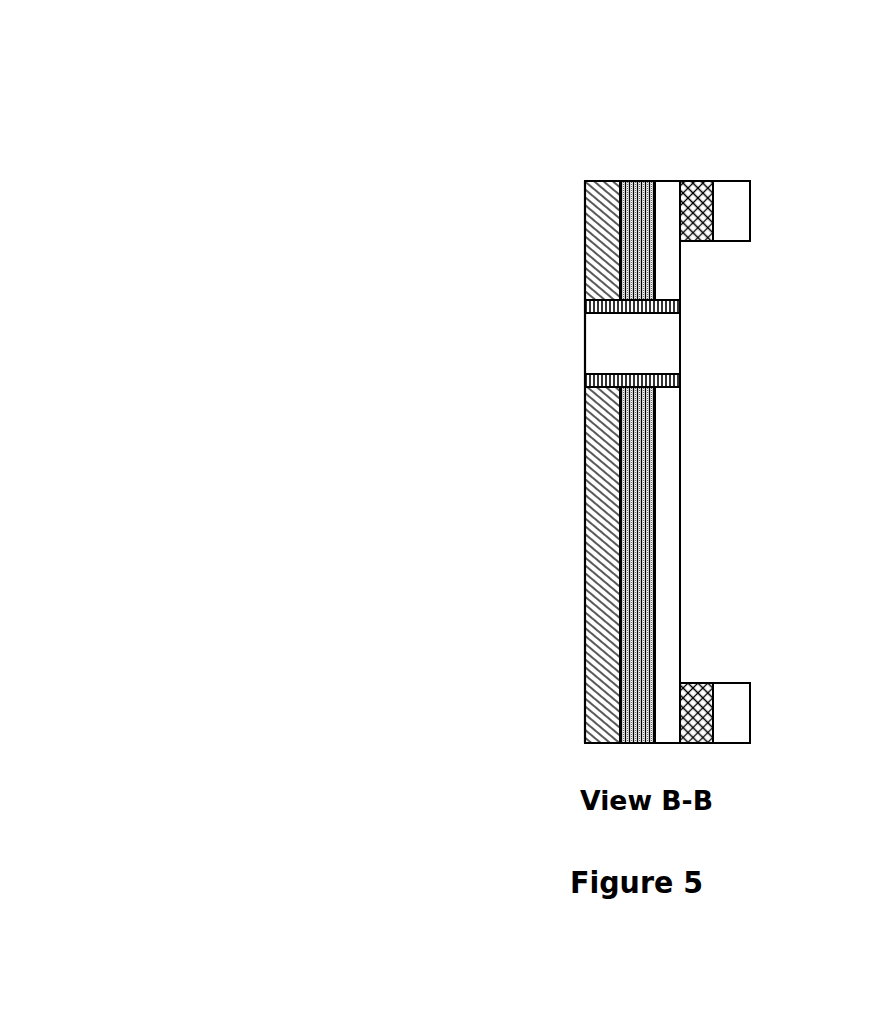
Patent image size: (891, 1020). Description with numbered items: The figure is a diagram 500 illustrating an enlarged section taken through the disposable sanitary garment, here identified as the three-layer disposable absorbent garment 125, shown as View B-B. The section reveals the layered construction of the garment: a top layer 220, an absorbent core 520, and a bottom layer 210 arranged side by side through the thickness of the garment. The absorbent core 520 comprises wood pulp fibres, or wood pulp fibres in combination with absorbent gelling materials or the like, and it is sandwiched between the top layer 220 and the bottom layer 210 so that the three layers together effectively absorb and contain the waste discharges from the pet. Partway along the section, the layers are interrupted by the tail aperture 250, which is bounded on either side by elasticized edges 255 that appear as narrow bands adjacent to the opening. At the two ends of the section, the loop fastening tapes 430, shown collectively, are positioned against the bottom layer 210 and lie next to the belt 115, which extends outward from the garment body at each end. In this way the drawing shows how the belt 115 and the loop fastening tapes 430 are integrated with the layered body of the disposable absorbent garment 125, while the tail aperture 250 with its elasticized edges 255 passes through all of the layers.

The diagram 500 is at (198, 115).
The disposable absorbent garment 125 is at (592, 152).
The belt 115 is at (752, 187).
The loop fastening tapes 430 is at (692, 182).
The top layer 220 is at (585, 215).
The absorbent core 520 is at (633, 540).
The bottom layer 210 is at (683, 444).
The elasticized edges 255 is at (585, 305).
The tail aperture 250 is at (585, 345).